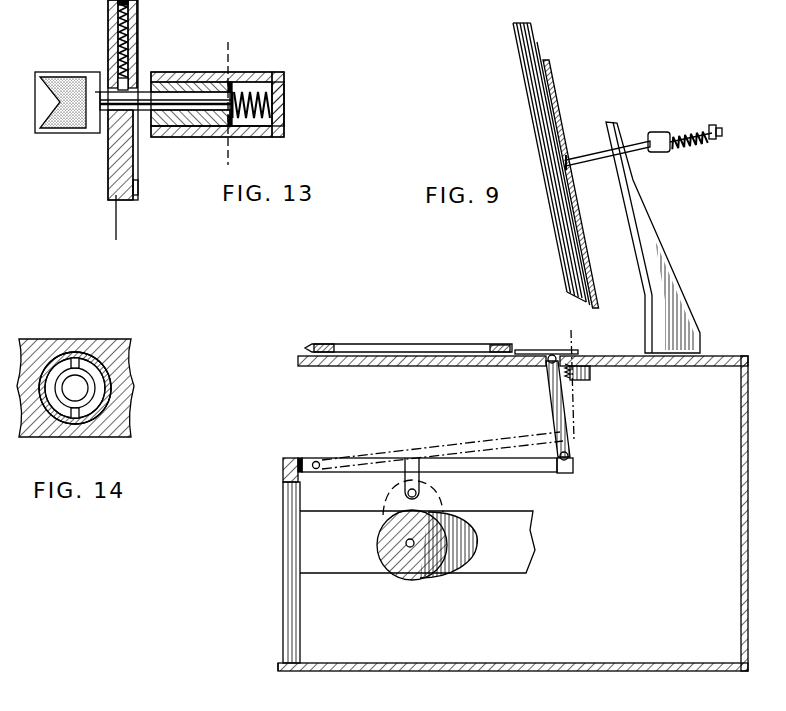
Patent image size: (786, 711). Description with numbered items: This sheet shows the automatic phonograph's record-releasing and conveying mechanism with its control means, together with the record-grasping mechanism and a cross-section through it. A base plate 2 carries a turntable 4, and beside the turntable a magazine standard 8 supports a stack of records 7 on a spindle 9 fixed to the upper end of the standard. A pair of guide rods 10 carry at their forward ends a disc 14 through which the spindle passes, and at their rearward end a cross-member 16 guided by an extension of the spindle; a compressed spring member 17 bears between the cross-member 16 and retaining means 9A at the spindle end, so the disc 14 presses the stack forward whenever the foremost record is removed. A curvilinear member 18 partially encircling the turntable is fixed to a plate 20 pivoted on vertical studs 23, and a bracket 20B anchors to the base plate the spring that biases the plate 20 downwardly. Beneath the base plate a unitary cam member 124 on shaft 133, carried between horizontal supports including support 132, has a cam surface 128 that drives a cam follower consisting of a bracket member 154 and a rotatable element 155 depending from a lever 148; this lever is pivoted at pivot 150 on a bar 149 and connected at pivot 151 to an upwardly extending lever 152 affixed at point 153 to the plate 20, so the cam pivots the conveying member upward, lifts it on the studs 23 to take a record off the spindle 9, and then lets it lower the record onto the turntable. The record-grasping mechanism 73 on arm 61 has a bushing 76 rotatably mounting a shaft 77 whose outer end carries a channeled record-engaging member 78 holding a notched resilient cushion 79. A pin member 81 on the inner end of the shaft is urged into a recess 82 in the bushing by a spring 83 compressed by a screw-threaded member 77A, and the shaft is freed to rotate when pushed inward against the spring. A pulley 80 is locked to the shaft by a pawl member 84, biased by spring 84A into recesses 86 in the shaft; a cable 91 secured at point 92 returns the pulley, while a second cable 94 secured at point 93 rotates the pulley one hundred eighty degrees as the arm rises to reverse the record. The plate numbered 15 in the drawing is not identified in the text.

In FIG. 9, the base plate 2 is at (372, 367).
In FIG. 9, the turntable 4 is at (346, 343).
In FIG. 9, the stack of records 7 is at (522, 48).
In FIG. 9, the standard 8 is at (640, 230).
In FIG. 9, the spindle 9 is at (687, 145).
In FIG. 9, the retaining means 9A is at (716, 126).
In FIG. 9, the guide rods 10 is at (585, 152).
In FIG. 13, the disc 14 is at (222, 53).
In FIG. 9, the disc 14 is at (553, 88).
In FIG. 13, the vertical plate 15 is at (140, 54).
In FIG. 9, the cross-member 16 is at (656, 132).
In FIG. 9, the spring member 17 is at (690, 128).
In FIG. 9, the curvilinear member 18 is at (503, 345).
In FIG. 9, the plate 20 is at (538, 350).
In FIG. 9, the bracket 20B is at (590, 376).
In FIG. 9, the vertical studs 23 is at (575, 380).
In FIG. 13, the arm 61 is at (277, 73).
In FIG. 14, the arm 61 is at (125, 360).
In FIG. 13, the record-grasping mechanism 73 is at (84, 141).
In FIG. 13, the bushing 76 is at (195, 122).
In FIG. 13, the shaft 77 is at (192, 97).
In FIG. 14, the shaft 77 is at (82, 387).
In FIG. 13, the screw-threaded member 77A is at (285, 116).
In FIG. 13, the channeled record-engaging member 78 is at (58, 71).
In FIG. 13, the notched resilient cushion 79 is at (57, 125).
In FIG. 13, the pulley 80 is at (112, 45).
In FIG. 13, the pin member 81 is at (230, 86).
In FIG. 14, the pin member 81 is at (75, 356).
In FIG. 13, the recess 82 is at (228, 130).
In FIG. 14, the recess 82 is at (75, 437).
In FIG. 13, the spring 83 is at (266, 102).
In FIG. 13, the pawl member 84 is at (121, 82).
In FIG. 13, the spring 84A is at (140, 41).
In FIG. 13, the recesses 86 is at (166, 100).
In FIG. 13, the cable 91 is at (130, 6).
In FIG. 13, the securing point 92 is at (140, 186).
In FIG. 13, the securing point 93 is at (115, 24).
In FIG. 13, the second cable 94 is at (118, 233).
In FIG. 9, the unitary cam member 124 is at (426, 580).
In FIG. 9, the cam surface 128 is at (476, 546).
In FIG. 9, the horizontal support 132 is at (520, 555).
In FIG. 9, the shaft 133 is at (408, 548).
In FIG. 9, the lever 148 is at (447, 460).
In FIG. 9, the bar 149 is at (283, 470).
In FIG. 9, the pivot 150 is at (315, 461).
In FIG. 9, the pivotal connection 151 is at (569, 456).
In FIG. 9, the upwardly extending lever 152 is at (557, 397).
In FIG. 9, the attachment point 153 is at (548, 363).
In FIG. 9, the bracket member 154 is at (421, 480).
In FIG. 9, the rotatable element 155 is at (405, 492).